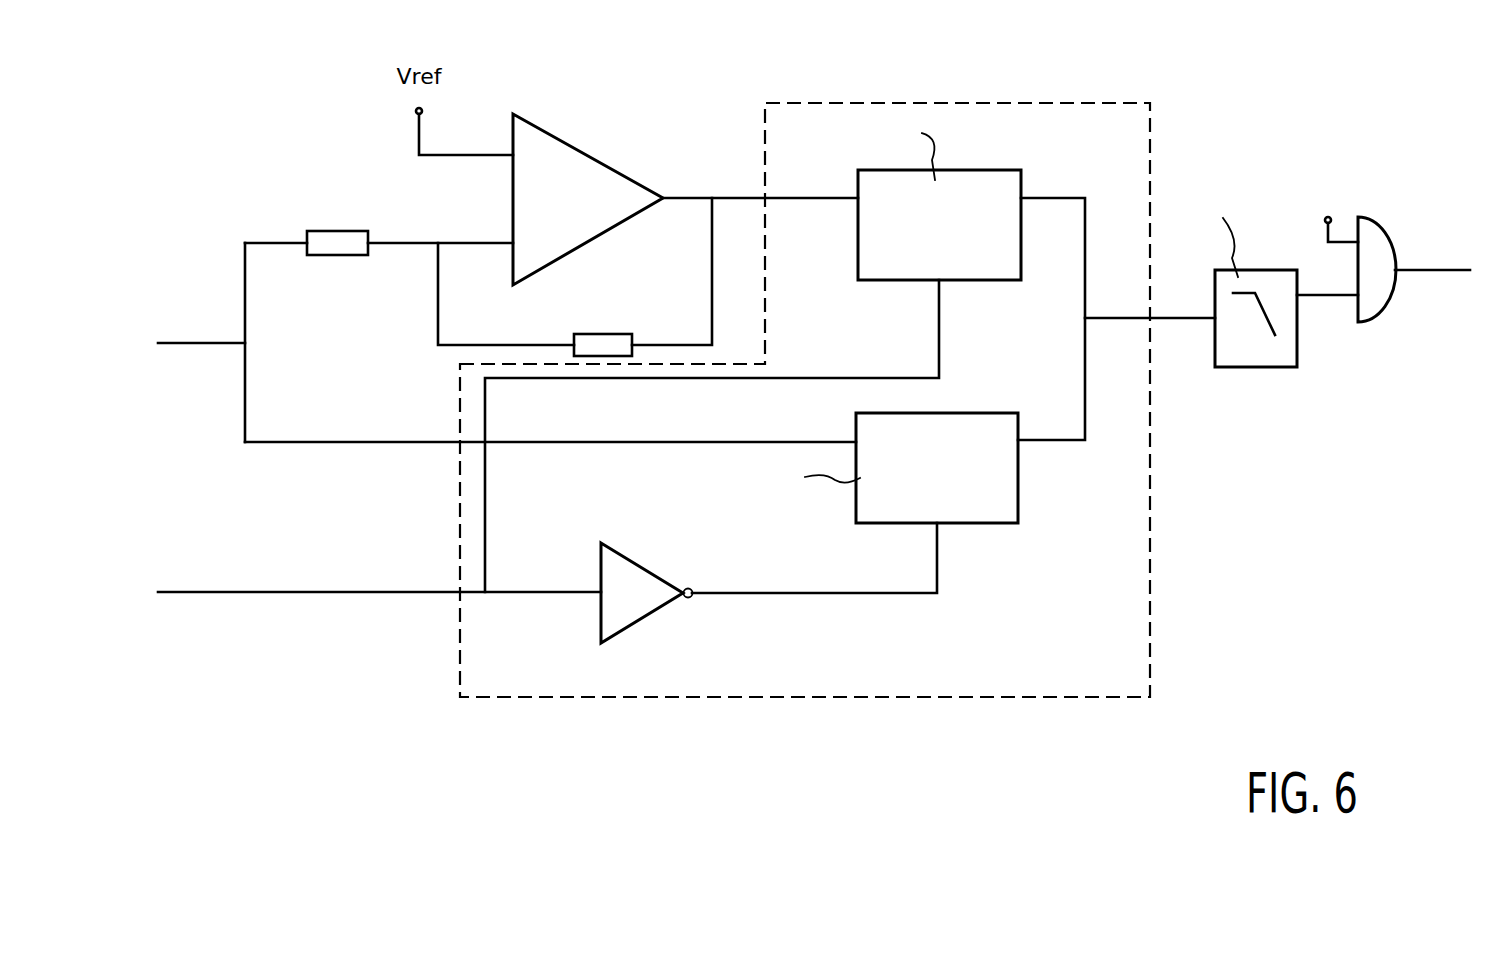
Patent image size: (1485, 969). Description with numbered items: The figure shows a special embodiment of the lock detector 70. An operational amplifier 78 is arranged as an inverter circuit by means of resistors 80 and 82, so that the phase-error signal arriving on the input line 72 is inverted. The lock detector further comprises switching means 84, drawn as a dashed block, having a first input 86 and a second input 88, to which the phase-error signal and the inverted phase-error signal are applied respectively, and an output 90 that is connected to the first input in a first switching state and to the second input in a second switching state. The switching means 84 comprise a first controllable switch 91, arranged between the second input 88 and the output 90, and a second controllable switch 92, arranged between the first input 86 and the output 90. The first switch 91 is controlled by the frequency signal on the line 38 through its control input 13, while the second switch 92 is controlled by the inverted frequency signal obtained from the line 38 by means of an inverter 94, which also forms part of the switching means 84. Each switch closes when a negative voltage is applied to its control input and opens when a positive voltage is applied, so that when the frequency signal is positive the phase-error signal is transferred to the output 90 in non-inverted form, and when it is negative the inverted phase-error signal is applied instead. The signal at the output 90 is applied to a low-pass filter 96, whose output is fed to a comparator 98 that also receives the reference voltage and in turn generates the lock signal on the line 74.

The lock detector 70 is at (1287, 682).
The input signal line 72 is at (205, 345).
The line 74 is at (1427, 265).
The operational amplifier 78 is at (590, 187).
The resistor 80 is at (320, 240).
The resistor 82 is at (605, 348).
The switching means 84 is at (1134, 682).
The first input 86 is at (427, 443).
The second input 88 is at (742, 195).
The output 90 is at (1155, 316).
The first controllable switch 91 is at (876, 265).
The second controllable switch 92 is at (1002, 503).
The inverter 94 is at (630, 618).
The low-pass filter 96 is at (1255, 355).
The comparator 98 is at (1373, 295).
The line 38 is at (230, 594).
The switch control terminal 13 is at (733, 436).